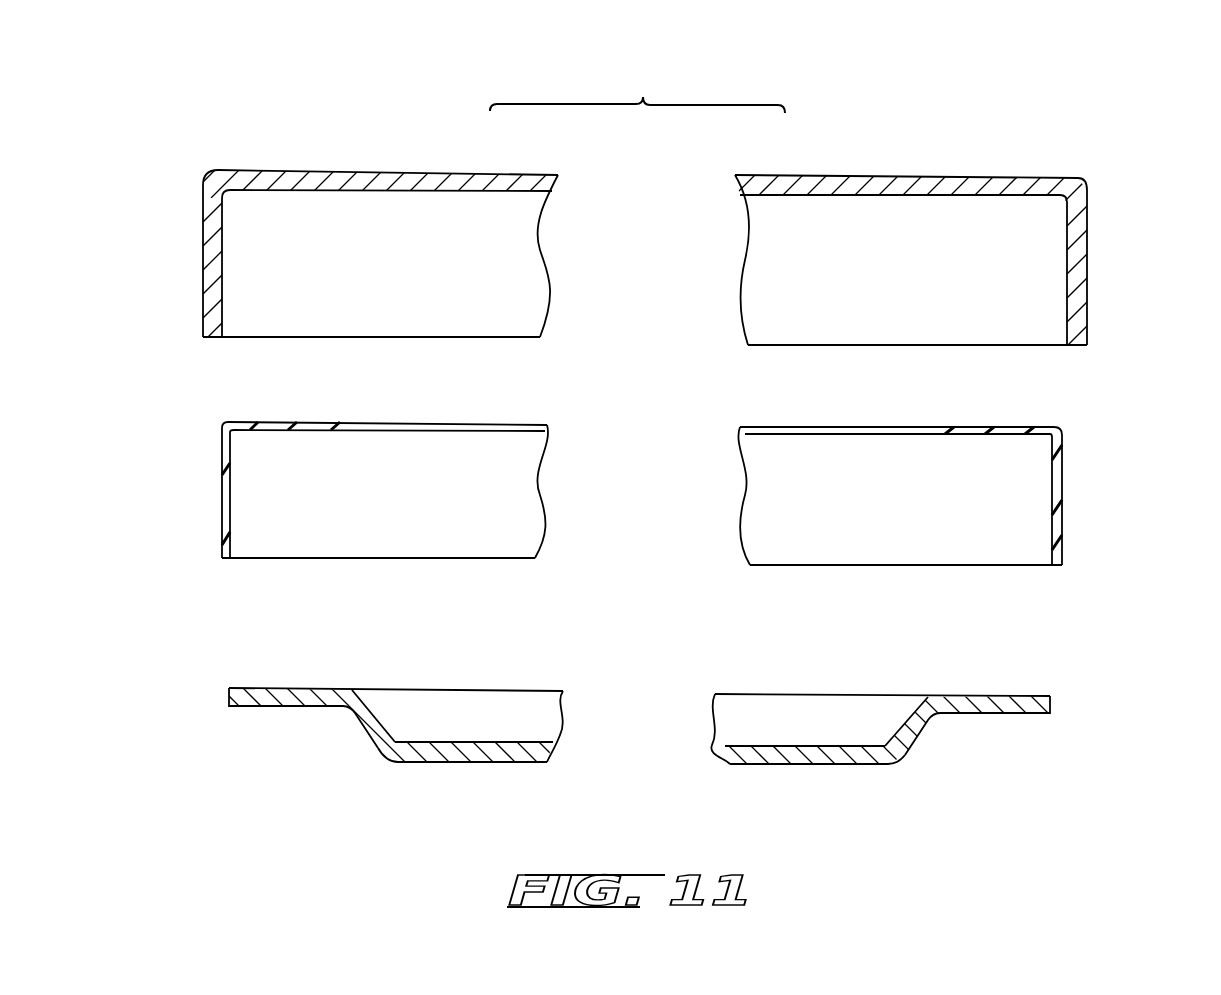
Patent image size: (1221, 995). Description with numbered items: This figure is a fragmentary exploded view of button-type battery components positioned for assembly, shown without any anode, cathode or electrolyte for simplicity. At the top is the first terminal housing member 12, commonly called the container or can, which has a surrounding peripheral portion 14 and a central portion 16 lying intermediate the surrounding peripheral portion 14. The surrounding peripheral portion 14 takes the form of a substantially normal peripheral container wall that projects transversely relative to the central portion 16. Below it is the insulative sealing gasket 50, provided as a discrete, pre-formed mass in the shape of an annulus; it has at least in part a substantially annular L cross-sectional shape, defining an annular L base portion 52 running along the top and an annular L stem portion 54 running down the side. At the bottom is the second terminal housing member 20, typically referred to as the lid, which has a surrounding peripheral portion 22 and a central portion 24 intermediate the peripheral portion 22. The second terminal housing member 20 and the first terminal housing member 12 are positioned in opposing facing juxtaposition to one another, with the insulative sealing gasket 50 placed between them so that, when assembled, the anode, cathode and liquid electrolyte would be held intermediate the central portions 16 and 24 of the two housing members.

The first terminal housing member 12 is at (637, 202).
The surrounding peripheral portion 14 is at (203, 285).
The central portion 16 is at (433, 170).
The second terminal housing member 20 is at (627, 778).
The surrounding peripheral portion 22 is at (277, 706).
The central portion 24 is at (478, 750).
The insulative sealing gasket 50 is at (635, 467).
The annular L base portion 52 is at (283, 425).
The annular L stem portion 54 is at (222, 518).